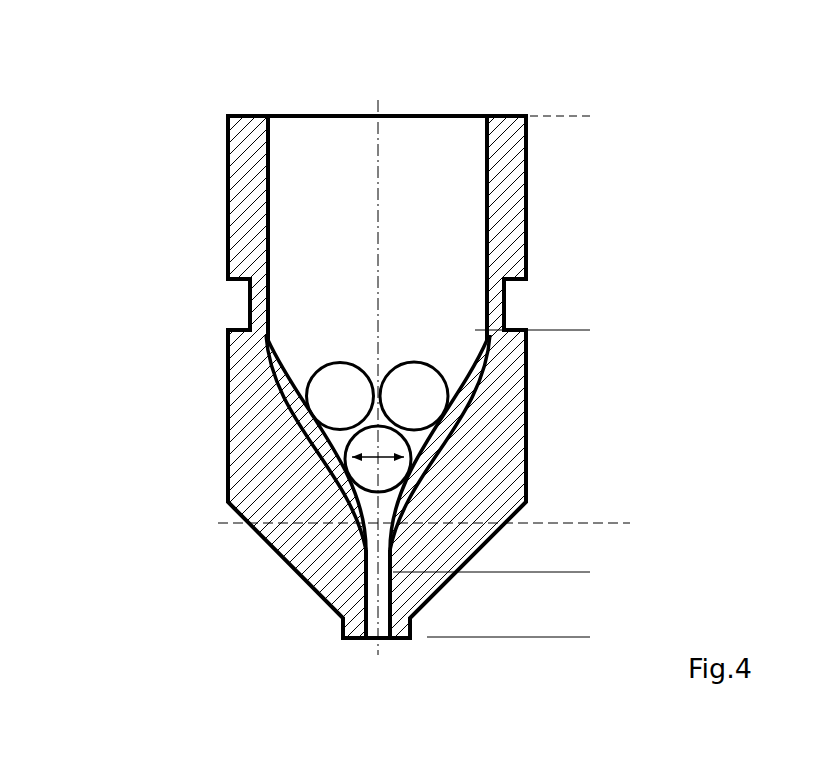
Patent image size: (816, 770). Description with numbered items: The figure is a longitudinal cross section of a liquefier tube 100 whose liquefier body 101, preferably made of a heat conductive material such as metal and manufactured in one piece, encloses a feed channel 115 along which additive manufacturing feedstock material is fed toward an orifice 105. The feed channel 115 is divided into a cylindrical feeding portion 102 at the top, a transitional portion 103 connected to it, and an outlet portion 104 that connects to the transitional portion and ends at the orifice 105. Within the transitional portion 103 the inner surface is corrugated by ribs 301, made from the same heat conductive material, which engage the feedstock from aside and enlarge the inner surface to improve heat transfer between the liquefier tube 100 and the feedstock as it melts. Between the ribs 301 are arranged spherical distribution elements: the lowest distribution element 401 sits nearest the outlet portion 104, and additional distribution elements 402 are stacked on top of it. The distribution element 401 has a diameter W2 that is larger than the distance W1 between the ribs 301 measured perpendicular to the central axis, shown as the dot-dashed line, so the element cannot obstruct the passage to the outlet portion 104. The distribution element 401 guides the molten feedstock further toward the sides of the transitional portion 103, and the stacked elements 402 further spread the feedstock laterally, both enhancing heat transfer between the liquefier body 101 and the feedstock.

The liquefier tube 100 is at (184, 208).
The liquefier body 101 is at (243, 387).
The feeding portion 102 is at (598, 117).
The transitional portion 103 is at (598, 331).
The outlet portion 104 is at (598, 573).
The orifice 105 is at (378, 638).
The feed channel 115 is at (431, 127).
The ribs 301 is at (303, 422).
The distribution element 401 is at (368, 473).
The additional distribution elements 402 is at (412, 378).
The distance between the ribs W1 is at (446, 526).
The diameter of the distribution element W2 is at (376, 455).